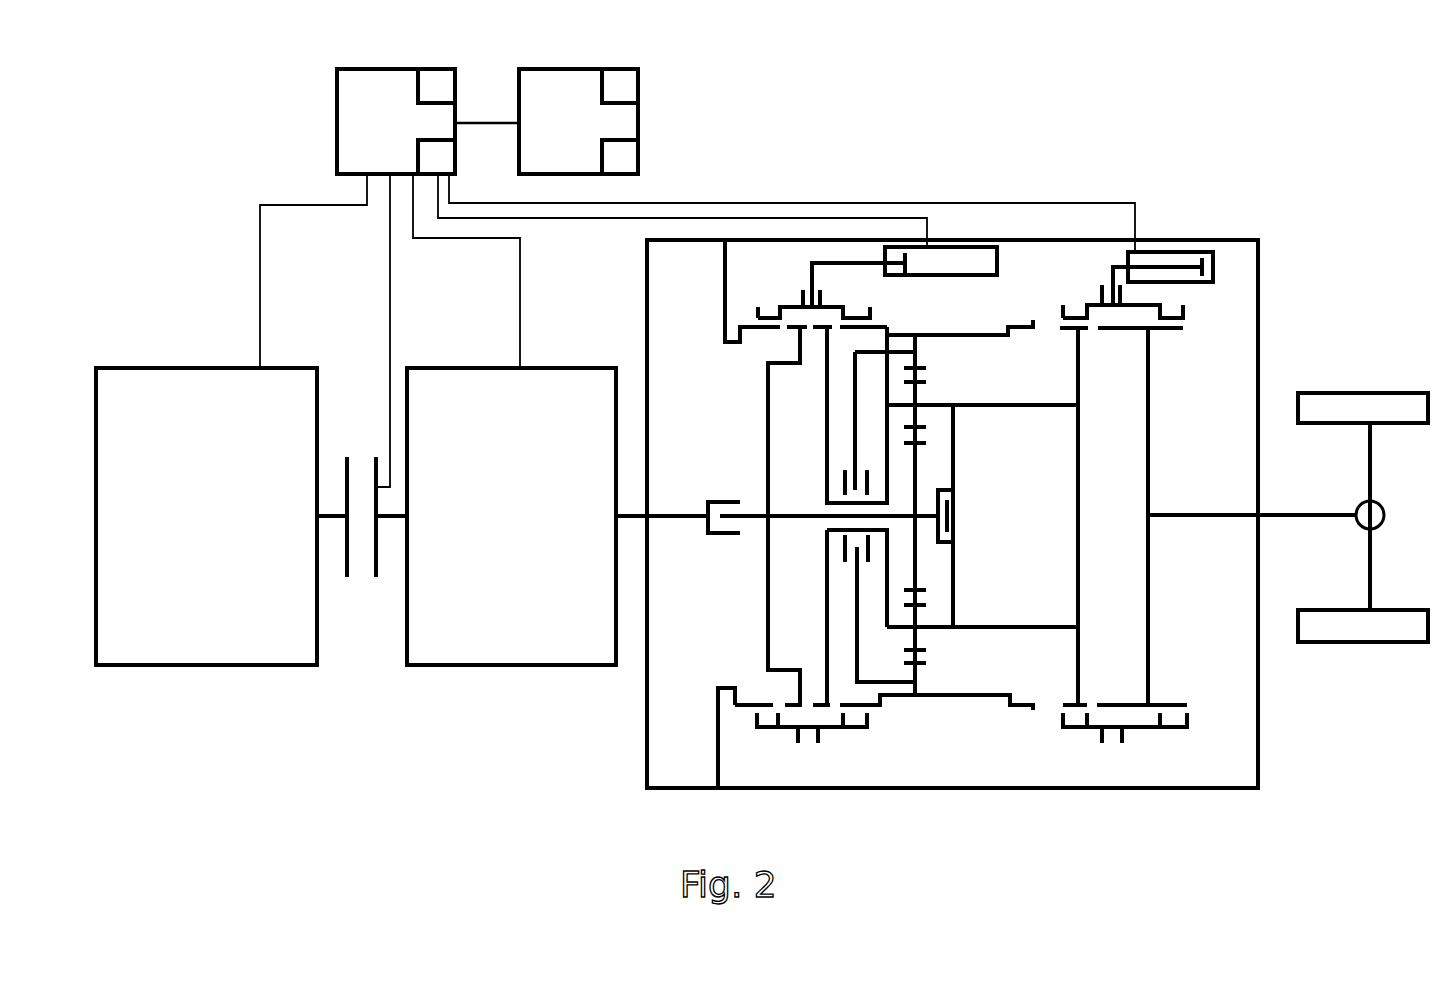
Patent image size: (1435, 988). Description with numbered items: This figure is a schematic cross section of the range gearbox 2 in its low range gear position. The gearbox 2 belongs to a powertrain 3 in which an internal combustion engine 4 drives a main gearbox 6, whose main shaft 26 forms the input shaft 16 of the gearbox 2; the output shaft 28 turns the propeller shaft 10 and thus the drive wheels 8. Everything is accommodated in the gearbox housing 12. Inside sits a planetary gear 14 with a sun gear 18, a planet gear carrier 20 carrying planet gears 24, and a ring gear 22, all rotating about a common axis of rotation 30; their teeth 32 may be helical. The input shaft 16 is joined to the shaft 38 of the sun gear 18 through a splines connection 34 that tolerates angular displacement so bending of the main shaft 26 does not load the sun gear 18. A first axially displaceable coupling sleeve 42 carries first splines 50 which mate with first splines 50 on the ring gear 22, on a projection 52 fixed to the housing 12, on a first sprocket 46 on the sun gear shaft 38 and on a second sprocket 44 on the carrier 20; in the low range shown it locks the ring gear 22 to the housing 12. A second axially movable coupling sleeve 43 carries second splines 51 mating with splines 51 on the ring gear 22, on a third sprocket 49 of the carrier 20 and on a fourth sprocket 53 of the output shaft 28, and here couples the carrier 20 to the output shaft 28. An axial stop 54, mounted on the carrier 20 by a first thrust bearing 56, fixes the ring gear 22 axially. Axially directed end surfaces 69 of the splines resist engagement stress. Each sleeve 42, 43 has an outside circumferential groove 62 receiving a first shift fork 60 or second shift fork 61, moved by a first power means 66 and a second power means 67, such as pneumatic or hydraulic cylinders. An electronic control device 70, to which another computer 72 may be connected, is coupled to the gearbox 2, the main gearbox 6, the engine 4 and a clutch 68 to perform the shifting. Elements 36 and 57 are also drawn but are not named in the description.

The gearbox 2 is at (945, 173).
The powertrain 3 is at (170, 288).
The internal combustion engine 4 is at (195, 665).
The main gearbox 6 is at (510, 665).
The drive wheels 8 is at (1352, 393).
The propeller shaft 10 is at (1277, 515).
The gearbox housing 12 is at (1057, 240).
The planetary gear 14 is at (992, 558).
The input shaft 16 is at (677, 518).
The sun gear 18 is at (917, 532).
The planet gear carrier 20 is at (1082, 408).
The ring gear 22 is at (917, 342).
The planet gears 24 is at (917, 392).
The main shaft 26 is at (627, 510).
The output shaft 28 is at (1148, 525).
The axis of rotation 30 is at (888, 517).
The teeth 32 is at (920, 592).
The splines connection 34 is at (712, 500).
The clutch housing 36 is at (713, 533).
The shaft of the sun gear 38 is at (758, 518).
The first axially displaceable coupling sleeve 42 is at (838, 304).
The second axially movable coupling sleeve 43 is at (1183, 320).
The second sprocket 44 is at (827, 393).
The first sprocket 46 is at (763, 607).
The third sprocket 49 is at (1080, 357).
The first splines 50 is at (767, 330).
The second splines 51 is at (1170, 330).
The projection 52 is at (725, 305).
The fourth sprocket 53 is at (1150, 438).
The axial stop 54 is at (875, 392).
The first thrust bearing 56 is at (853, 545).
The coupling 57 is at (950, 490).
The first shift fork 60 is at (812, 290).
The second shift fork 61 is at (1113, 265).
The circumferential groove 62 is at (810, 742).
The first power means 66 is at (1007, 247).
The second power means 67 is at (1213, 255).
The clutch 68 is at (350, 563).
The axially directed end surfaces 69 is at (757, 318).
The electronic control device 70 is at (333, 100).
The computer 72 is at (638, 120).